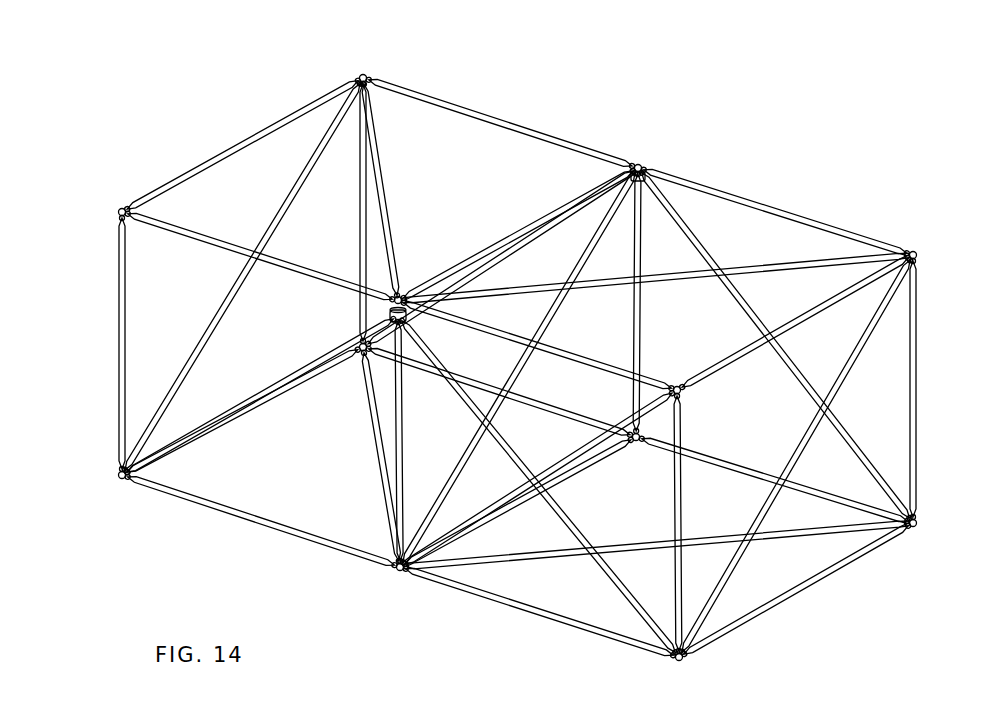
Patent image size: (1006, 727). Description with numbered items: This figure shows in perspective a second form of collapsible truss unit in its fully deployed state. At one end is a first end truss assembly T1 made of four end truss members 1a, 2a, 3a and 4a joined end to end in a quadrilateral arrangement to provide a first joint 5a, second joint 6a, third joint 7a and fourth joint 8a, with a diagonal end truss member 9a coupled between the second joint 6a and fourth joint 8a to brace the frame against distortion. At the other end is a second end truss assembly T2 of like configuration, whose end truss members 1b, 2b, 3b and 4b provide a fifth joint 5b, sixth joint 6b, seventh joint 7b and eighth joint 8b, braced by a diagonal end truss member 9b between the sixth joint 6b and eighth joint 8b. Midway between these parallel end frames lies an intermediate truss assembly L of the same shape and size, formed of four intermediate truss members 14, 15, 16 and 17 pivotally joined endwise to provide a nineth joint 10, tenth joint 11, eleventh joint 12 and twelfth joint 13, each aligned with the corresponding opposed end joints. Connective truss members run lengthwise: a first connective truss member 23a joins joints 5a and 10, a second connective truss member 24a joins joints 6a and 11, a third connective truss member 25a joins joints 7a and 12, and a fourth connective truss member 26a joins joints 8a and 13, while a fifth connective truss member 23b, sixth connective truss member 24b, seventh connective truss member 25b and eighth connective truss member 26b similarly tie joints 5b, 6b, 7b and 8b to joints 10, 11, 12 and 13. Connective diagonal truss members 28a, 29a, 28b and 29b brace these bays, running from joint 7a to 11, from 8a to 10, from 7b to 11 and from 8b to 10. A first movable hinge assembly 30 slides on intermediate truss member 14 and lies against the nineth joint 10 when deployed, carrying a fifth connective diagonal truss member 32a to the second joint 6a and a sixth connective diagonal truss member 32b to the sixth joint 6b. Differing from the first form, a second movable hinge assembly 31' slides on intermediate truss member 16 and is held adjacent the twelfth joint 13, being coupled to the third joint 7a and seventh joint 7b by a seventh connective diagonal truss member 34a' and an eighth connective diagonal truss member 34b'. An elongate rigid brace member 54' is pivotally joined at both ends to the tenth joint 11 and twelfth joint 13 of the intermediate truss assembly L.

The end truss member 1a is at (118, 380).
The end truss member 1b is at (683, 500).
The end truss member 2a is at (255, 404).
The end truss member 2b is at (805, 587).
The end truss member 3a is at (360, 187).
The end truss member 3b is at (918, 441).
The end truss member 4a is at (283, 122).
The end truss member 4b is at (724, 362).
The first joint 5a is at (118, 212).
The fifth joint 5b is at (684, 393).
The second joint 6a is at (118, 477).
The sixth joint 6b is at (690, 658).
The third joint 7a is at (360, 352).
The seventh joint 7b is at (918, 523).
The fourth joint 8a is at (363, 72).
The eighth joint 8b is at (918, 256).
The diagonal end truss member 9a is at (215, 321).
The diagonal end truss member 9b is at (843, 378).
The nineth joint 10 is at (400, 294).
The tenth joint 11 is at (400, 575).
The eleventh joint 12 is at (636, 445).
The twelfth joint 13 is at (637, 160).
The intermediate truss member 14 is at (401, 452).
The intermediate truss member 15 is at (480, 516).
The intermediate truss member 16 is at (641, 258).
The intermediate truss member 17 is at (505, 240).
The first connective truss member 23a is at (243, 250).
The fifth connective truss member 23b is at (612, 368).
The second connective truss member 24a is at (255, 520).
The sixth connective truss member 24b is at (560, 620).
The third connective truss member 25a is at (420, 366).
The seventh connective truss member 25b is at (810, 491).
The fourth connective truss member 26a is at (526, 132).
The eighth connective truss member 26b is at (798, 220).
The first connective diagonal truss member 28a is at (380, 453).
The third connective diagonal truss member 28b is at (518, 558).
The second connective diagonal truss member 29a is at (384, 190).
The fourth connective diagonal truss member 29b is at (742, 272).
The first movable hinge assembly 30 is at (388, 316).
The second movable hinge assembly 31' is at (677, 162).
The fifth connective diagonal truss member 32a is at (288, 377).
The sixth connective diagonal truss member 32b is at (568, 520).
The seventh connective diagonal truss member 34a' is at (501, 257).
The eighth connective diagonal truss member 34b' is at (776, 345).
The brace member 54' is at (519, 367).
The first end truss assembly T1 is at (206, 162).
The second end truss assembly T2 is at (918, 357).
The intermediate truss assembly L is at (549, 214).